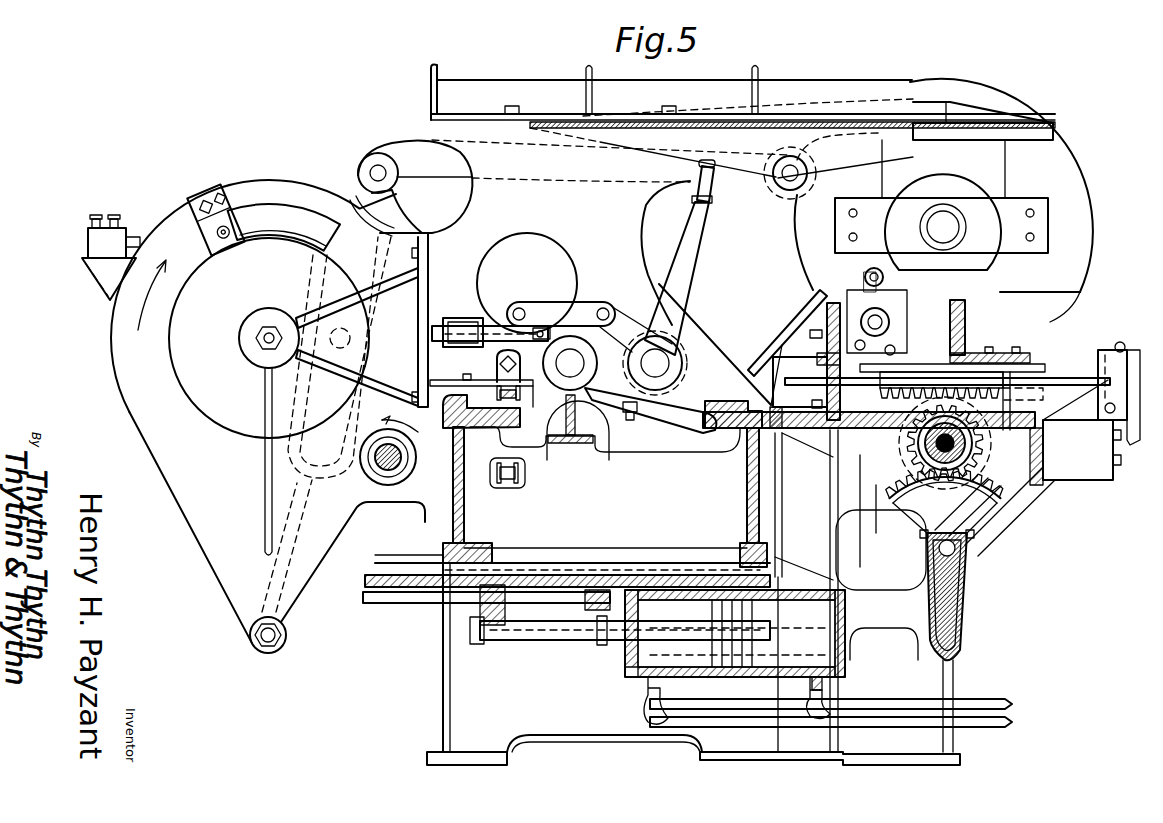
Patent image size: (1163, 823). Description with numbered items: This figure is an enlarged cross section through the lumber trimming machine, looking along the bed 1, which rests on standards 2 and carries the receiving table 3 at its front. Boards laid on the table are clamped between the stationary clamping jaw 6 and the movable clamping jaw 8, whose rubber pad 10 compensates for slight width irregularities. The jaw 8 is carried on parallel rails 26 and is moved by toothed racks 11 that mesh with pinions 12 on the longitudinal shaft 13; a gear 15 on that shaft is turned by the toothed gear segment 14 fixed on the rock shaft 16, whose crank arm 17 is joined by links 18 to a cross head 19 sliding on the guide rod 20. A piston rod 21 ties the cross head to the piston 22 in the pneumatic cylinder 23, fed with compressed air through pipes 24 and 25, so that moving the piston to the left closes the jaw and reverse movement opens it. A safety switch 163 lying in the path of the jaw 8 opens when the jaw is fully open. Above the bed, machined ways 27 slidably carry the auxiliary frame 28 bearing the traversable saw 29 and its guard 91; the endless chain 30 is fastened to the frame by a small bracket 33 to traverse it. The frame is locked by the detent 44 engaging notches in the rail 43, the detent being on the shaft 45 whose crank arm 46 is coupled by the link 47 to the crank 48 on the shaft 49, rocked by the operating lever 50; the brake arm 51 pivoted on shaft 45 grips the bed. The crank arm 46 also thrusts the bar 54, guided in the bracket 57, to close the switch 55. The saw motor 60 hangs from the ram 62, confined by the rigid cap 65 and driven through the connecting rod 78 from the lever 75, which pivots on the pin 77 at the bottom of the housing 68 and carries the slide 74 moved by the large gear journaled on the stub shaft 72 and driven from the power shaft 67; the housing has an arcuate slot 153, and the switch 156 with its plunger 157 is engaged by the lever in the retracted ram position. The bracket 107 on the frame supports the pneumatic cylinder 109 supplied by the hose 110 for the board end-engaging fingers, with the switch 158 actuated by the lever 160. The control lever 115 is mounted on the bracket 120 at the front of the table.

The bed 1 is at (745, 505).
The standards 2 is at (693, 664).
The receiving table 3 is at (845, 365).
The stationary clamping jaw 6 is at (810, 305).
The movable clamping jaw 8 is at (968, 342).
The pad 10 is at (990, 352).
The toothed racks 11 is at (856, 555).
The pinions 12 is at (1015, 505).
The longitudinal shaft 13 is at (930, 447).
The toothed gear segment 14 is at (972, 530).
The gear 15 is at (944, 500).
The rock shaft 16 is at (968, 565).
The crank arm 17 is at (965, 625).
The links 18 is at (873, 645).
The cross head 19 is at (470, 618).
The guide rod 20 is at (370, 588).
The piston rod 21 is at (562, 632).
The piston 22 is at (722, 612).
The pneumatic cylinder 23 is at (624, 688).
The pipe 24 is at (965, 700).
The pipe 25 is at (965, 727).
The parallel rails 26 is at (1092, 378).
The machined ways 27 is at (480, 455).
The auxiliary frame 28 is at (548, 236).
The traversable saw 29 is at (1078, 298).
The endless chain 30 is at (512, 490).
The bracket 33 is at (490, 365).
The rail 43 is at (598, 446).
The detent 44 is at (552, 442).
The shaft 45 is at (625, 330).
The crank arm 46 is at (560, 310).
The link 47 is at (585, 300).
The crank 48 is at (655, 295).
The shaft 49 is at (715, 345).
The operating lever 50 is at (680, 292).
The brake arm 51 is at (680, 425).
The bar 54 is at (492, 326).
The switch 55 is at (455, 326).
The guide bracket 57 is at (462, 318).
The electric motor 60 is at (941, 222).
The ram 62 is at (962, 116).
The cap 65 is at (712, 92).
The power-driven shaft 67 is at (390, 462).
The housing 68 is at (352, 525).
The stub shaft 72 is at (268, 334).
The slide 74 is at (928, 330).
The lever 75 is at (358, 173).
The pivot pin 77 is at (258, 648).
The connecting rod 78 is at (405, 152).
The guard 91 is at (1072, 215).
The bracket 107 is at (805, 290).
The pneumatic cylinder 109 is at (884, 311).
The hose 110 is at (822, 340).
The manually operable lever 115 is at (1122, 342).
The bracket 120 is at (1128, 450).
The arcuate slot 153 is at (300, 217).
The switch 156 is at (88, 241).
The operating plunger 157 is at (137, 228).
The switch 158 is at (850, 250).
The lever 160 is at (222, 218).
The safety switch 163 is at (1080, 468).